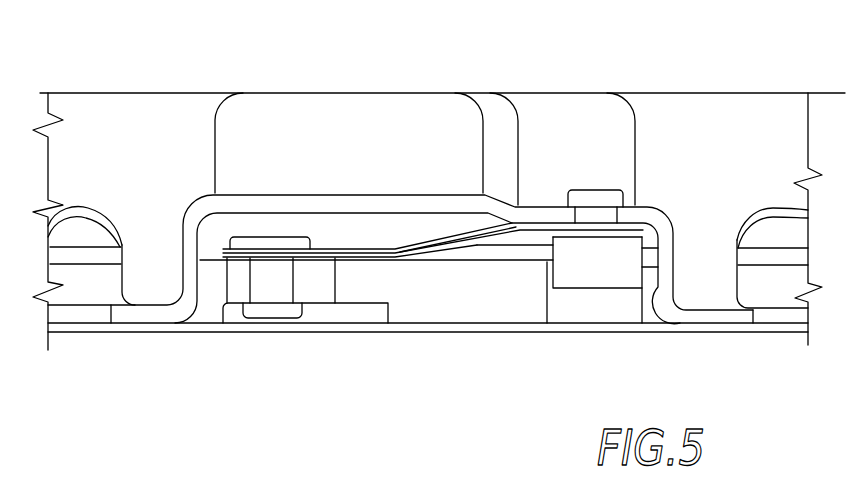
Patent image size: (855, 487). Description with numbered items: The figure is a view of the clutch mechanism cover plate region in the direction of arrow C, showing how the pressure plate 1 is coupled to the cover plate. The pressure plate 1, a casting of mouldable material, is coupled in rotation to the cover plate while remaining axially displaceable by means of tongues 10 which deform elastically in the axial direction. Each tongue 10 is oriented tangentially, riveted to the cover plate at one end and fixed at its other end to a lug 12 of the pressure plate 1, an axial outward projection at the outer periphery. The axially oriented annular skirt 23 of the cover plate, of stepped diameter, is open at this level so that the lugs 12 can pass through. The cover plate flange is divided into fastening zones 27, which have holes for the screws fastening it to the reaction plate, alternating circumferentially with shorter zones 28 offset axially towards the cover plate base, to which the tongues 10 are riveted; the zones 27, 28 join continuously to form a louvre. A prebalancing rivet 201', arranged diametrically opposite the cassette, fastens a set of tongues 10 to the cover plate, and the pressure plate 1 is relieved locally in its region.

The pressure plate 1 is at (362, 283).
The tongues 10 is at (477, 243).
The lug 12 is at (238, 285).
The annular skirt 23 is at (83, 175).
The fastening zones 27 is at (147, 310).
The fastening zones 28 is at (388, 203).
The prebalancing rivet 201' is at (620, 316).